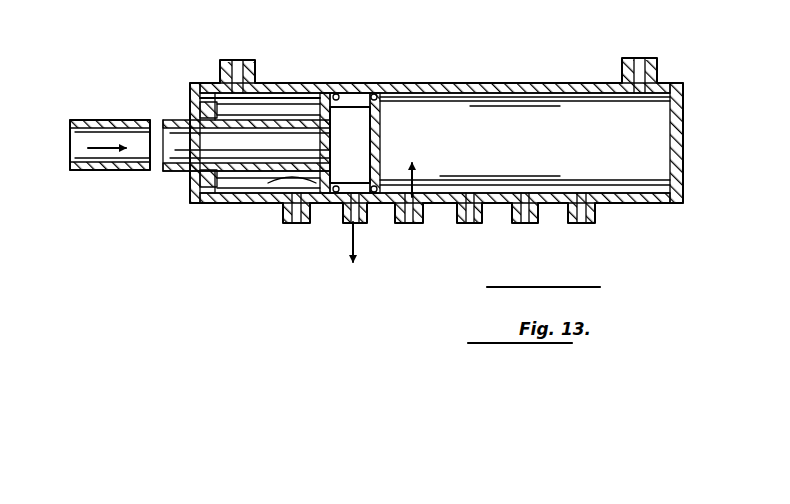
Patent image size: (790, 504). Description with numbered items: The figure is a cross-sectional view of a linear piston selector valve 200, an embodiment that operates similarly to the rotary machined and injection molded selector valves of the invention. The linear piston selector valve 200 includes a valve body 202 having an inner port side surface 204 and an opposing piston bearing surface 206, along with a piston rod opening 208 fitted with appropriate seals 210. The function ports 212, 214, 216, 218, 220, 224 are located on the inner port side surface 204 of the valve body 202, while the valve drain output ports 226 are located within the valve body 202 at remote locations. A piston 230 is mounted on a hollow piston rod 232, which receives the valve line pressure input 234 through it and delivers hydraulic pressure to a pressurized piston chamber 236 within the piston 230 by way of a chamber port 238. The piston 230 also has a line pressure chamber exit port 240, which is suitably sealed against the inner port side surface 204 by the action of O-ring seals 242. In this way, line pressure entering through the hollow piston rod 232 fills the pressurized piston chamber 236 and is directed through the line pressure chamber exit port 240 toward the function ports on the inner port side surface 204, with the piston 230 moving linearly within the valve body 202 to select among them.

The linear piston selector valve 200 is at (365, 62).
The valve body 202 is at (292, 83).
The inner port side surface 204 is at (312, 133).
The piston bearing surface 206 is at (524, 100).
The piston rod opening 208 is at (203, 190).
The seals 210 is at (205, 108).
The function port 212 is at (292, 222).
The function port 214 is at (347, 224).
The function port 216 is at (406, 222).
The function port 218 is at (473, 222).
The function port 220 is at (525, 222).
The function port 224 is at (580, 222).
The valve drain output ports 226 is at (241, 72).
The piston 230 is at (390, 105).
The hollow piston rod 232 is at (128, 120).
The valve line pressure input 234 is at (80, 160).
The pressurized piston chamber 236 is at (338, 124).
The chamber port 238 is at (258, 168).
The line pressure chamber exit port 240 is at (345, 208).
The '0' ring seals 242 is at (375, 208).